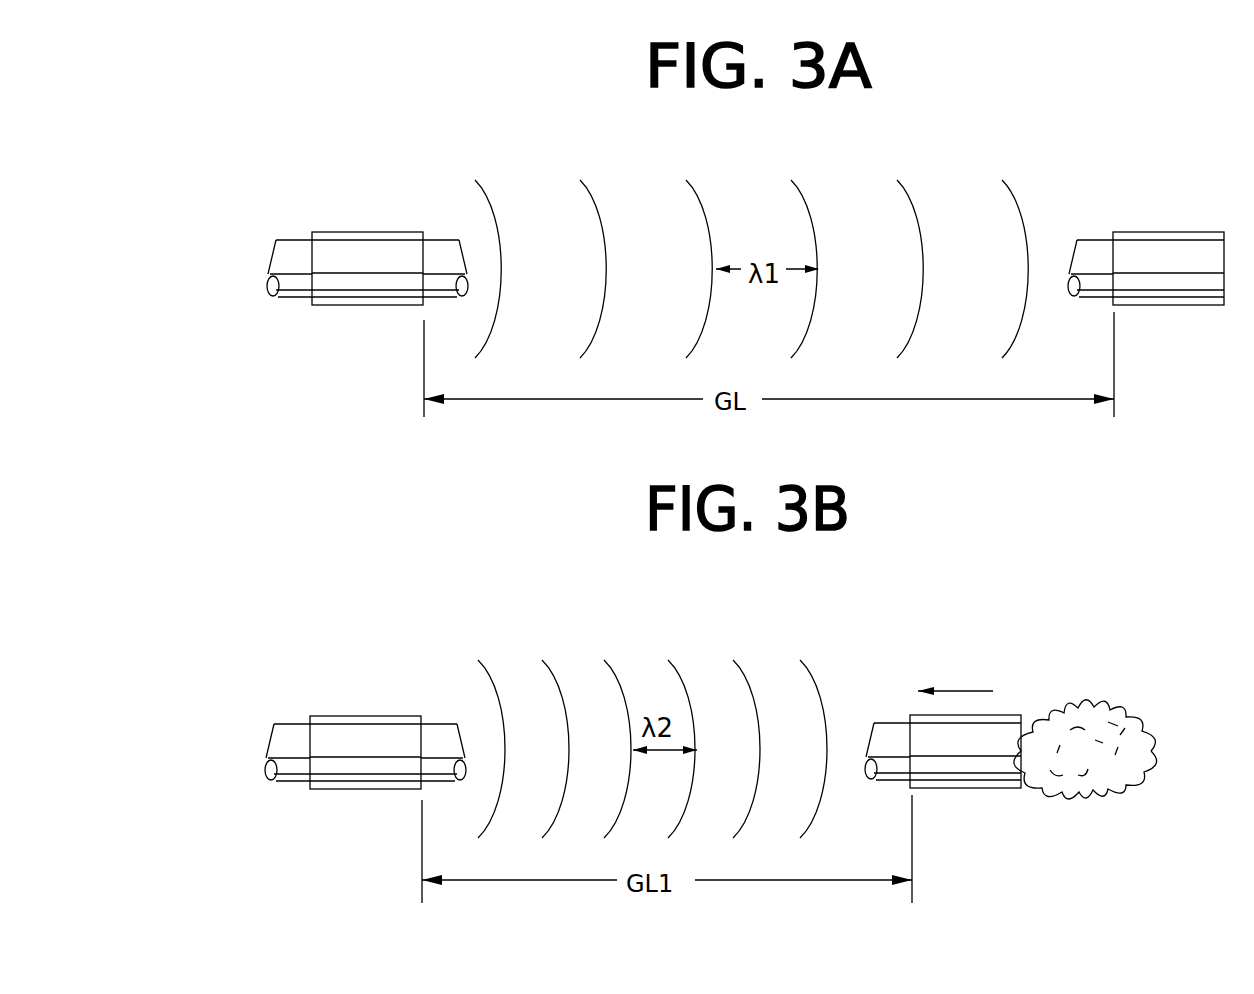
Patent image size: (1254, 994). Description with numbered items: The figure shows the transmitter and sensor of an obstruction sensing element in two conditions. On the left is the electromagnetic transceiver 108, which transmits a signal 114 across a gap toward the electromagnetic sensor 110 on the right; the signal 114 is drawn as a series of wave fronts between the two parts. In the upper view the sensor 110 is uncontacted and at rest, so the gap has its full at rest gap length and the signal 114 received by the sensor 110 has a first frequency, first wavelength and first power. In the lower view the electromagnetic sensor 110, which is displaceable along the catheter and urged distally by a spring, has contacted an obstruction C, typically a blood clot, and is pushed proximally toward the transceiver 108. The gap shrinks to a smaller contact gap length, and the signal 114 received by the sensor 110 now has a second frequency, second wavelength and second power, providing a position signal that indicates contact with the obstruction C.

In FIG. 3A, the electromagnetic transceiver 108 is at (330, 242).
In FIG. 3B, the electromagnetic transceiver 108 is at (325, 724).
In FIG. 3A, the electromagnetic sensor 110 is at (1190, 240).
In FIG. 3B, the electromagnetic sensor 110 is at (983, 770).
In FIG. 3A, the signal 114 is at (745, 172).
In FIG. 3B, the signal 114 is at (685, 652).
In FIG. 3B, the obstruction C is at (1125, 718).